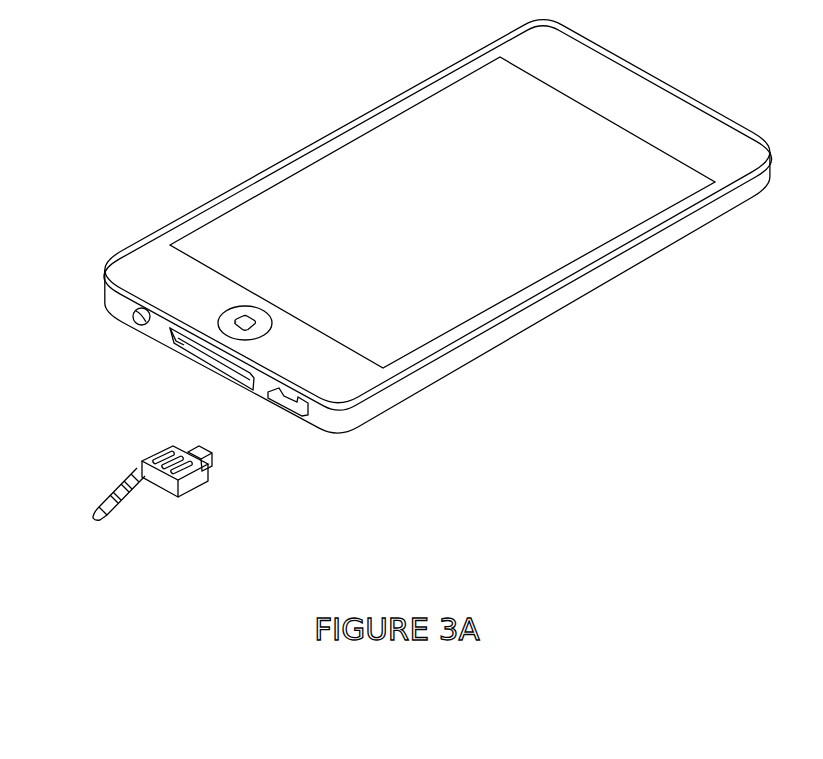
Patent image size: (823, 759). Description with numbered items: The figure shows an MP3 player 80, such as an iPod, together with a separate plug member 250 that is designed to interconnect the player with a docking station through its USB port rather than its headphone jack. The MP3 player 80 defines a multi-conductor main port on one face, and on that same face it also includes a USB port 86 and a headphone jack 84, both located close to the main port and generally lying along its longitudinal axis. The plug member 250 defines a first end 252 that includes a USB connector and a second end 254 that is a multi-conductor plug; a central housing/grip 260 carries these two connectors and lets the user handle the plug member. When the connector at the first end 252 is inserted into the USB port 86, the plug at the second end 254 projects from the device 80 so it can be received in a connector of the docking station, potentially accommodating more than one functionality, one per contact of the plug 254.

The MP3 player 80 is at (550, 311).
The headphone jack 84 is at (133, 321).
The USB port 86 is at (283, 404).
The plug member 250 is at (129, 488).
The first end 252 is at (198, 451).
The second end 254 is at (118, 512).
The central housing/grip 260 is at (197, 483).